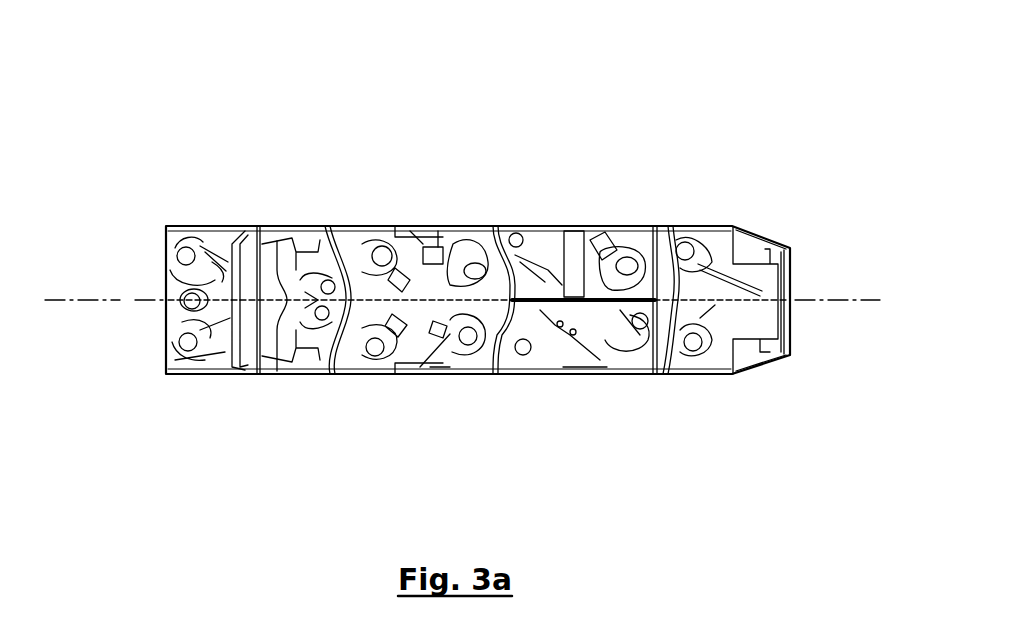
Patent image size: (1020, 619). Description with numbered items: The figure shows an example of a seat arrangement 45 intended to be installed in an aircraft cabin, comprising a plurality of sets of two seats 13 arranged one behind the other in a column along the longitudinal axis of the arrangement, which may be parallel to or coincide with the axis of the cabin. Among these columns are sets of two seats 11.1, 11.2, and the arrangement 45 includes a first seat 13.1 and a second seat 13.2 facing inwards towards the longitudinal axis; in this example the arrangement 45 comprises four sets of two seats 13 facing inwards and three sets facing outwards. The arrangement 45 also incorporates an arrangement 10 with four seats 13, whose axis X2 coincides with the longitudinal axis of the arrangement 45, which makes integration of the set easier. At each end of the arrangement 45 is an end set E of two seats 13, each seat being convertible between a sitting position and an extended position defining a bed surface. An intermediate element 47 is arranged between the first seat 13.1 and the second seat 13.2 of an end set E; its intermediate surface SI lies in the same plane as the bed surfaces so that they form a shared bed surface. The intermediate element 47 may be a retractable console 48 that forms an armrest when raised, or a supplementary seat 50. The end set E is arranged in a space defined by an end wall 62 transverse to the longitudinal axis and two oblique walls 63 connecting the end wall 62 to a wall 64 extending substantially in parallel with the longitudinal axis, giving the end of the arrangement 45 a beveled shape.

The seat arrangement 45 is at (462, 260).
The second seat 13.2 is at (186, 226).
The first seat 13.1 is at (185, 375).
The seat 13 is at (348, 226).
The end set E is at (232, 213).
The intermediate surface SI is at (165, 275).
The supplementary seat 50 is at (173, 280).
The arrangement with four seats 10 is at (412, 226).
The set of two seats 11.1 is at (540, 218).
The set of two seats 11.2 is at (480, 384).
The console 48 is at (657, 227).
The wall 64 is at (698, 227).
The intermediate element 47 is at (735, 262).
The oblique wall 63 is at (783, 228).
The end wall 62 is at (793, 273).
The axis of the four-seat arrangement X2 is at (857, 300).